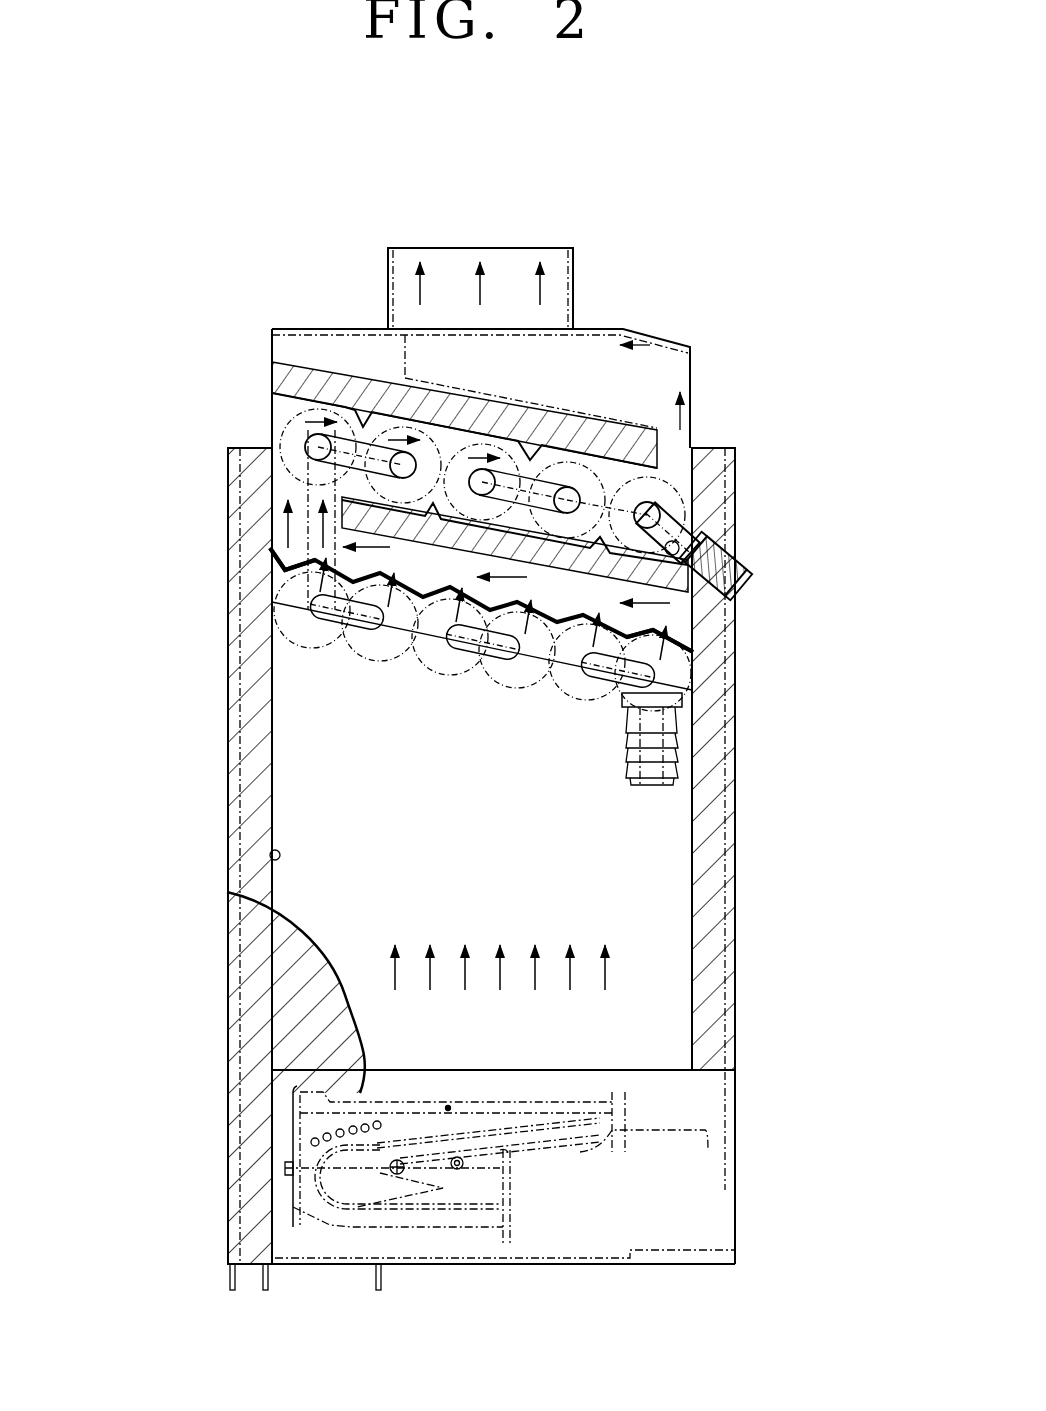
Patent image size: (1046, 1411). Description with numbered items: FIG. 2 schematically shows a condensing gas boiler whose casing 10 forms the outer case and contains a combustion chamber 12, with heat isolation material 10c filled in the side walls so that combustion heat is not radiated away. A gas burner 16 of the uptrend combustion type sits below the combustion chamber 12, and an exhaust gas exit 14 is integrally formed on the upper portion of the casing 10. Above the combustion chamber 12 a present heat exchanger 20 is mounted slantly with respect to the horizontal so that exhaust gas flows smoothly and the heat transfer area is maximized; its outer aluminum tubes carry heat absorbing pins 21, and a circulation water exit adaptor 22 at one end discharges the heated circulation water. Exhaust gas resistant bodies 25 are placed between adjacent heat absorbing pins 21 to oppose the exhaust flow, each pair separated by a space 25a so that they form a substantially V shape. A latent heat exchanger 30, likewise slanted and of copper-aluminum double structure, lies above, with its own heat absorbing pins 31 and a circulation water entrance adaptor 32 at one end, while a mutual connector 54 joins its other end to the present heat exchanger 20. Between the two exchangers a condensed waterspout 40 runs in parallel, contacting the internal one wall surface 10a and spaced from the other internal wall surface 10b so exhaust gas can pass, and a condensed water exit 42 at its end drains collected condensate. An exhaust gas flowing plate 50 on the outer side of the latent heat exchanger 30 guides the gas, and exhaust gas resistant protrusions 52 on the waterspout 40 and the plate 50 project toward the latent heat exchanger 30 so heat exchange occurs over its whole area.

The casing 10 is at (225, 917).
The internal one wall surface 10a is at (690, 922).
The other internal wall surface 10b is at (272, 862).
The heat isolation material 10c is at (272, 1038).
The combustion chamber 12 is at (340, 797).
The exhaust gas exit 14 is at (453, 248).
The gas burner 16 is at (640, 1113).
The present heat exchanger 20 is at (510, 653).
The heat absorbing pins 21 is at (300, 638).
The circulation water exit adaptor 22 is at (680, 773).
The exhaust gas resistant bodies 25 is at (693, 652).
The space 25a is at (700, 632).
The latent heat exchanger 30 is at (690, 528).
The heat absorbing pins 31 is at (300, 491).
The circulation water entrance adaptor 32 is at (733, 540).
The condensed waterspout 40 is at (300, 525).
The condensed water exit 42 is at (698, 515).
The exhaust gas flowing plate 50 is at (265, 393).
The exhaust gas resistant protrusions 52 is at (262, 446).
The mutual connector 54 is at (285, 603).